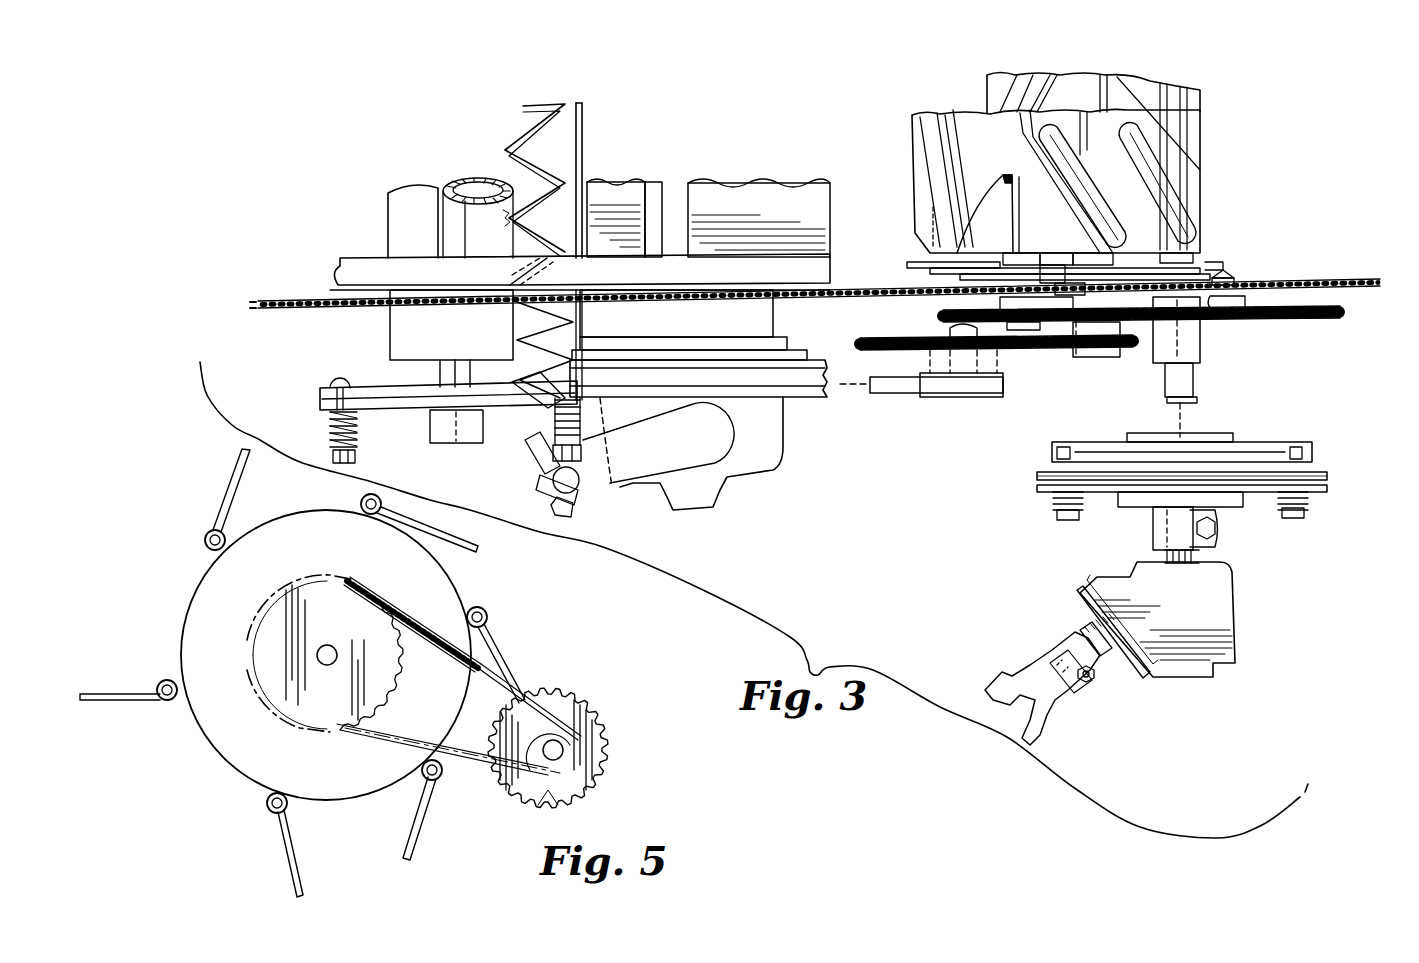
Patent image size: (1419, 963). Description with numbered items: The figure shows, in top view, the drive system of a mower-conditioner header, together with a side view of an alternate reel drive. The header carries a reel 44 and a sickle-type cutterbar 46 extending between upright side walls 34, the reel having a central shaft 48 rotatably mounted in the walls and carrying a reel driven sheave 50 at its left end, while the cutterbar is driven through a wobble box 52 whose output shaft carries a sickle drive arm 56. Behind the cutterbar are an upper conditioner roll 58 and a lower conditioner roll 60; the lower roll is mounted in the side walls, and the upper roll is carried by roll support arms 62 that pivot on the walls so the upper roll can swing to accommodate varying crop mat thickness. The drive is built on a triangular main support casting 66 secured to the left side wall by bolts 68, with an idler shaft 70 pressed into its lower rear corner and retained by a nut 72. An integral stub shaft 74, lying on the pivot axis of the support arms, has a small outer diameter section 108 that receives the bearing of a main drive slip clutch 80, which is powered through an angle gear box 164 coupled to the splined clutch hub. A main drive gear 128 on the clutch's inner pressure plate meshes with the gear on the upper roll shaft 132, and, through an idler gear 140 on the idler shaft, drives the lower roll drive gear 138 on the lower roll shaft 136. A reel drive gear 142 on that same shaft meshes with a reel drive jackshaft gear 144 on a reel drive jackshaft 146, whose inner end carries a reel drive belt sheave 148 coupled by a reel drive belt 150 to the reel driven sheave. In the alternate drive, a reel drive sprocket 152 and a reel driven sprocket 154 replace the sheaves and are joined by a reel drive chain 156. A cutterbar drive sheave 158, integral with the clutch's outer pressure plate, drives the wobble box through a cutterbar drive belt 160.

In FIG. 3, the side walls 34 is at (268, 307).
In FIG. 5, the reel 44 is at (178, 632).
In FIG. 3, the sickle-type cutterbar 46 is at (500, 445).
In FIG. 3, the central shaft 48 is at (440, 363).
In FIG. 5, the central shaft 48 is at (335, 650).
In FIG. 3, the reel driven sheave 50 is at (318, 399).
In FIG. 3, the wobble box 52 is at (790, 440).
In FIG. 3, the sickle drive arm 56 is at (598, 480).
In FIG. 3, the upper conditioner roll 58 is at (912, 150).
In FIG. 3, the lower conditioner roll 60 is at (987, 92).
In FIG. 3, the roll support arms 62 is at (1210, 265).
In FIG. 3, the main support casting 66 is at (1255, 298).
In FIG. 3, the bolts 68 is at (1062, 272).
In FIG. 3, the idler shaft 70 is at (1228, 270).
In FIG. 3, the nut 72 is at (1240, 290).
In FIG. 3, the stub shaft 74 is at (1214, 341).
In FIG. 3, the main drive slip clutch 80 is at (1335, 448).
In FIG. 3, the small outer diameter section 108 is at (1198, 384).
In FIG. 3, the main drive gear 128 is at (1245, 320).
In FIG. 3, the shaft 132 is at (930, 265).
In FIG. 3, the shaft 136 is at (1103, 357).
In FIG. 3, the lower roll drive gear 138 is at (900, 293).
In FIG. 3, the idler gear 140 is at (1342, 312).
In FIG. 3, the reel drive gear 142 is at (1072, 358).
In FIG. 3, the reel drive jackshaft gear 144 is at (1025, 352).
In FIG. 5, the reel drive jackshaft gear 144 is at (603, 745).
In FIG. 3, the reel drive jackshaft 146 is at (948, 332).
In FIG. 5, the reel drive jackshaft 146 is at (565, 752).
In FIG. 3, the reel drive belt sheave 148 is at (935, 398).
In FIG. 3, the reel drive belt 150 is at (783, 398).
In FIG. 5, the reel drive sprocket 152 is at (530, 795).
In FIG. 5, the reel driven sprocket 154 is at (392, 688).
In FIG. 5, the reel drive chain 156 is at (428, 622).
In FIG. 3, the cutterbar drive sheave 158 is at (1330, 482).
In FIG. 3, the cutterbar drive belt 160 is at (708, 375).
In FIG. 3, the angle gear box 164 is at (1238, 610).